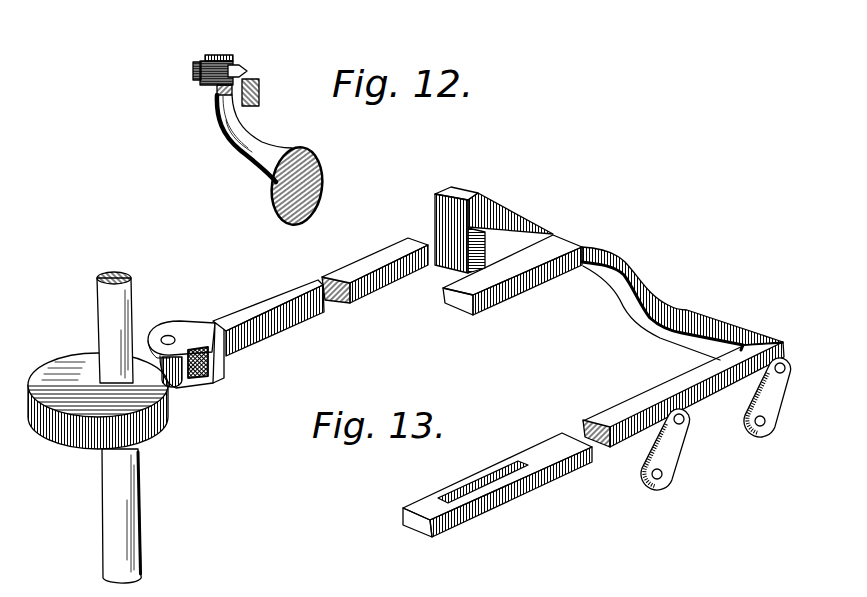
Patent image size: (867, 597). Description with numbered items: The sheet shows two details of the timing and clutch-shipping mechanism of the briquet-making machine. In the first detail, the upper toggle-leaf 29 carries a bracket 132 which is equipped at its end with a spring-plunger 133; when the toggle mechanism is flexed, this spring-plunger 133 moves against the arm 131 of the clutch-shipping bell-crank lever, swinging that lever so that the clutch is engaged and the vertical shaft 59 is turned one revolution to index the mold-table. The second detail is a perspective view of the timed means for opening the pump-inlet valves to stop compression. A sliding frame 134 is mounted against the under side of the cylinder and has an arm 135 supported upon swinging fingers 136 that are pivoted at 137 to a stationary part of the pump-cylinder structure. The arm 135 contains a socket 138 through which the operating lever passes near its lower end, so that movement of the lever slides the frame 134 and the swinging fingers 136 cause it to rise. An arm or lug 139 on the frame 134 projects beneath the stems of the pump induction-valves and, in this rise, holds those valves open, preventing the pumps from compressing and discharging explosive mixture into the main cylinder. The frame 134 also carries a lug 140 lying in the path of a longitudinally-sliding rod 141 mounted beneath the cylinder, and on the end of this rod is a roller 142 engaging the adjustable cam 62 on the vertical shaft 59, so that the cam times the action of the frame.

In FIG. 12, the upper toggle-leaf 29 is at (322, 170).
In FIG. 13, the vertical shaft 59 is at (95, 303).
In FIG. 13, the adjustable cam 62 is at (73, 437).
In FIG. 12, the arm 131 is at (258, 81).
In FIG. 12, the bracket 132 is at (224, 149).
In FIG. 12, the spring-plunger 133 is at (236, 63).
In FIG. 13, the sliding frame 134 is at (633, 261).
In FIG. 13, the arm 135 is at (575, 468).
In FIG. 13, the swinging fingers 136 is at (763, 397).
In FIG. 13, the pivot 137 is at (755, 437).
In FIG. 13, the socket 138 is at (480, 478).
In FIG. 13, the arm or lug 139 is at (513, 293).
In FIG. 13, the lug 140 is at (452, 258).
In FIG. 13, the longitudinally-sliding rod 141 is at (303, 321).
In FIG. 13, the roller 142 is at (188, 385).